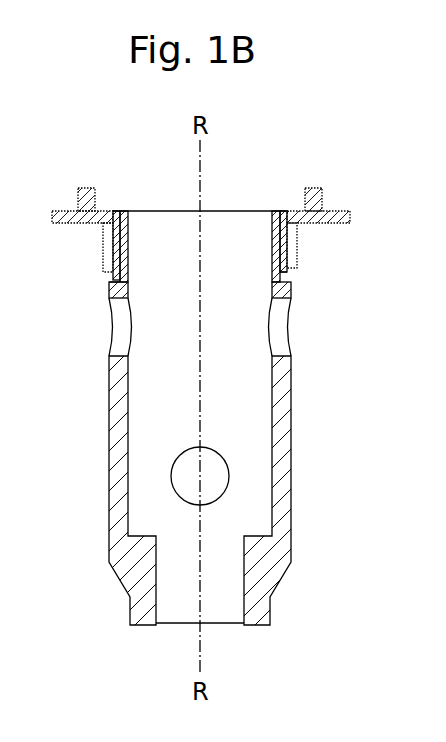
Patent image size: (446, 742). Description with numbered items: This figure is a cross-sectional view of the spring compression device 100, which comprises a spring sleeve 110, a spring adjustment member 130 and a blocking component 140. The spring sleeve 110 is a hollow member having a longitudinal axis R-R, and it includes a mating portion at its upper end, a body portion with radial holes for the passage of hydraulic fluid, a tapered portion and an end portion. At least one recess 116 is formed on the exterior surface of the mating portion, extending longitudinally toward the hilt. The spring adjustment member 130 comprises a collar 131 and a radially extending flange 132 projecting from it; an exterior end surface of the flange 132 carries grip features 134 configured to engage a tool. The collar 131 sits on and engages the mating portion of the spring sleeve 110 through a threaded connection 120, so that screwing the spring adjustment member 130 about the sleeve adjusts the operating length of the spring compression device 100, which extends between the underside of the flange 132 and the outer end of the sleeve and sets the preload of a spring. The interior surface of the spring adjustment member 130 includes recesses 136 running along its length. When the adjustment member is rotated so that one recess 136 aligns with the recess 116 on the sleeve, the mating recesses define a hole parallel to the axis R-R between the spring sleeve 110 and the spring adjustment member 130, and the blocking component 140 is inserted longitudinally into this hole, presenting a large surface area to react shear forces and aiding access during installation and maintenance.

The spring compression device 100 is at (84, 605).
The spring sleeve 110 is at (292, 470).
The recess 116 is at (108, 281).
The threaded connection 120 is at (114, 211).
The spring adjustment member 130 is at (301, 246).
The collar 131 is at (106, 248).
The flange 132 is at (349, 216).
The grip feature 134 is at (318, 187).
The recess 136 is at (290, 272).
The blocking component 140 is at (284, 211).